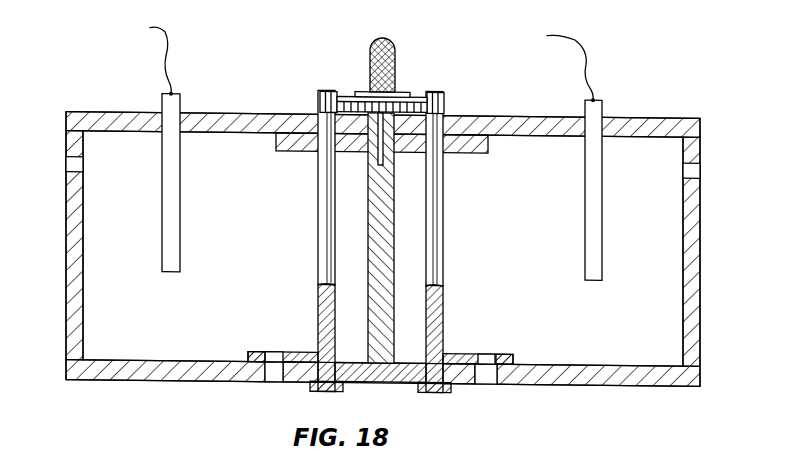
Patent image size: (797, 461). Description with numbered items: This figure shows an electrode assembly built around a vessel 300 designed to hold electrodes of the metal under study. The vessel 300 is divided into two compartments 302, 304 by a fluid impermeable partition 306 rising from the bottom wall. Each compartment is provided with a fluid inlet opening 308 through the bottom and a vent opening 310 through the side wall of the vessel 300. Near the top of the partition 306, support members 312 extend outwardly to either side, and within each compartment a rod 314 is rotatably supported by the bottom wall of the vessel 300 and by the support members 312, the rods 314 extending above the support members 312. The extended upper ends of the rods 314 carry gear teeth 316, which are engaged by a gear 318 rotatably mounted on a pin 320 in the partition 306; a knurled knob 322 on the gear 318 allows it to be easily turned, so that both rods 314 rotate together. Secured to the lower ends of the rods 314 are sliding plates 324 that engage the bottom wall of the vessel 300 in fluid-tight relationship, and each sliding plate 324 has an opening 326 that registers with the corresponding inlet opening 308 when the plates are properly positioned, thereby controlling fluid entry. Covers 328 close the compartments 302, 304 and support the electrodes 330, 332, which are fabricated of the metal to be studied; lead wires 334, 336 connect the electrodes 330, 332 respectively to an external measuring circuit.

The vessel 300 is at (753, 330).
The compartment 302 is at (192, 257).
The compartment 304 is at (571, 261).
The fluid impermeable partition 306 is at (394, 262).
The fluid inlet opening 308 is at (272, 382).
The vent opening 310 is at (70, 165).
The support member 312 is at (307, 152).
The rod 314 is at (320, 200).
The gear teeth 316 is at (318, 100).
The gear 318 is at (413, 97).
The pin 320 is at (382, 158).
The knurled knob 322 is at (385, 38).
The sliding plate 324 is at (248, 353).
The opening 326 is at (277, 352).
The cover 328 is at (125, 112).
The electrode 330 is at (163, 201).
The electrode 332 is at (596, 211).
The lead wire 334 is at (168, 41).
The lead wire 336 is at (584, 46).